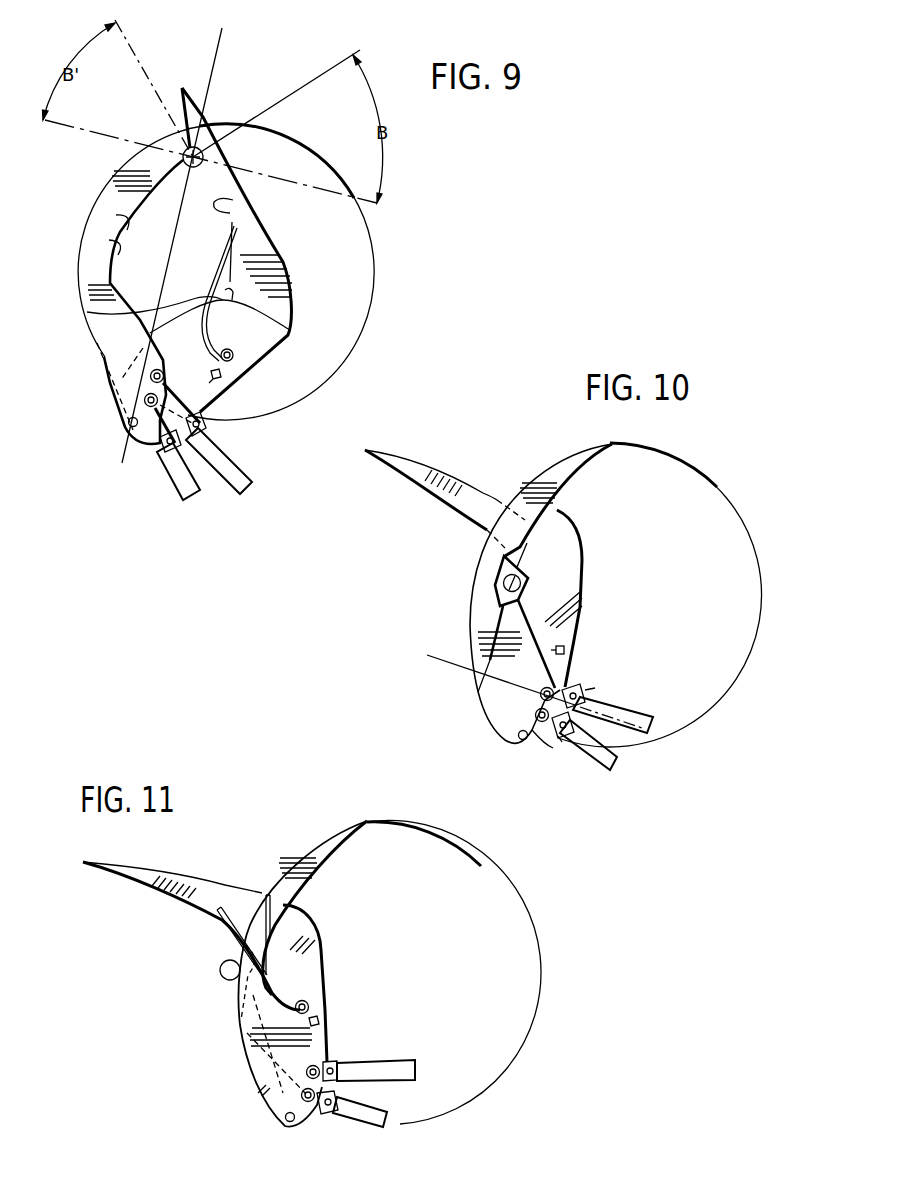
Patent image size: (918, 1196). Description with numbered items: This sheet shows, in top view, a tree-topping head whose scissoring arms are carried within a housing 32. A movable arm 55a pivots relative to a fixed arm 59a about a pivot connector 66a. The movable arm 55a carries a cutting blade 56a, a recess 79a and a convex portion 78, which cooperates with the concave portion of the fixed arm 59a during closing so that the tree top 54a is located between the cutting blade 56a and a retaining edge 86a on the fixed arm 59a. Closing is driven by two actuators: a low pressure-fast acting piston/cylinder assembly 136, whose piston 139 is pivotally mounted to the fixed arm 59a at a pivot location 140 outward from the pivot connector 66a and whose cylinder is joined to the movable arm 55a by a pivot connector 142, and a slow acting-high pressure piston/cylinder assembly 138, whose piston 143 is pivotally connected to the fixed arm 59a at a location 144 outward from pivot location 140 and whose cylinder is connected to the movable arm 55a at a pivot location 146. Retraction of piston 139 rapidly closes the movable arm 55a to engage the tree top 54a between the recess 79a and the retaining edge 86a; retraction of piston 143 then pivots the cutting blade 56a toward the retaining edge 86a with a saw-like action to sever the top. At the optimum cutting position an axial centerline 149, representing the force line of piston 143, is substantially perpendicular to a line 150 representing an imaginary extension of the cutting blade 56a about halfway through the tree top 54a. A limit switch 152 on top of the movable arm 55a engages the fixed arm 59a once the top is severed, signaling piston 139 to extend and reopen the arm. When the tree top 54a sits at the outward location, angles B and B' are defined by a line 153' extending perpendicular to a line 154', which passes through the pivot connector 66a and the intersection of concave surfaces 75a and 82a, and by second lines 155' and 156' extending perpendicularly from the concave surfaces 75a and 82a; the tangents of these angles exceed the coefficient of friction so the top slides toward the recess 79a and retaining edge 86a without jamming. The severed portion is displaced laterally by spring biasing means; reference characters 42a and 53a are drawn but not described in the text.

In FIG. 10, the housing 32 is at (699, 465).
In FIG. 11, the housing 32 is at (525, 1017).
In FIG. 9, the actuating rod 42a is at (240, 253).
In FIG. 11, the actuating rod 42a is at (222, 932).
In FIG. 9, the circular reference member 53a is at (375, 278).
In FIG. 9, the tree top 54a is at (183, 158).
In FIG. 10, the tree top 54a is at (503, 585).
In FIG. 11, the tree top 54a is at (220, 970).
In FIG. 9, the movable arm 55a is at (268, 300).
In FIG. 10, the movable arm 55a is at (430, 470).
In FIG. 11, the movable arm 55a is at (153, 870).
In FIG. 9, the cutting blade 56a is at (283, 328).
In FIG. 10, the cutting blade 56a is at (528, 578).
In FIG. 11, the cutting blade 56a is at (268, 935).
In FIG. 9, the fixed arm 59a is at (113, 190).
In FIG. 10, the fixed arm 59a is at (565, 460).
In FIG. 11, the fixed arm 59a is at (313, 843).
In FIG. 9, the pivot connector 66a is at (128, 422).
In FIG. 10, the pivot connector 66a is at (522, 742).
In FIG. 11, the pivot connector 66a is at (285, 1120).
In FIG. 9, the concave surface 75a is at (232, 214).
In FIG. 10, the concave surface 75a is at (450, 507).
In FIG. 11, the concave surface 75a is at (190, 906).
In FIG. 9, the convex portion 78 is at (143, 312).
In FIG. 9, the recess 79a is at (235, 278).
In FIG. 10, the recess 79a is at (503, 557).
In FIG. 9, the concave surface 82a is at (118, 222).
In FIG. 9, the retaining edge 86a is at (110, 247).
In FIG. 10, the retaining edge 86a is at (496, 582).
In FIG. 9, the low pressure-fast acting piston/cylinder assembly 136 is at (173, 468).
In FIG. 10, the low pressure-fast acting piston/cylinder assembly 136 is at (617, 758).
In FIG. 11, the low pressure-fast acting piston/cylinder assembly 136 is at (387, 1122).
In FIG. 9, the slow acting-high pressure piston/cylinder assembly 138 is at (232, 460).
In FIG. 10, the slow acting-high pressure piston/cylinder assembly 138 is at (648, 734).
In FIG. 11, the slow acting-high pressure piston/cylinder assembly 138 is at (400, 1060).
In FIG. 10, the piston 139 is at (553, 750).
In FIG. 9, the pivot location 140 is at (144, 400).
In FIG. 10, the pivot location 140 is at (536, 717).
In FIG. 11, the pivot location 140 is at (301, 1095).
In FIG. 10, the pivot connector 142 is at (562, 742).
In FIG. 10, the piston 143 is at (575, 686).
In FIG. 9, the location 144 is at (150, 376).
In FIG. 10, the location 144 is at (540, 697).
In FIG. 11, the location 144 is at (306, 1072).
In FIG. 10, the pivot location 146 is at (585, 690).
In FIG. 10, the axial centerline 149 is at (445, 667).
In FIG. 10, the line 150 is at (477, 683).
In FIG. 9, the limit switch 152 is at (222, 376).
In FIG. 10, the limit switch 152 is at (567, 650).
In FIG. 11, the limit switch 152 is at (319, 1020).
In FIG. 9, the line 153' is at (202, 161).
In FIG. 9, the line 154' is at (172, 245).
In FIG. 9, the second line 155' is at (276, 89).
In FIG. 9, the second line 156' is at (156, 79).